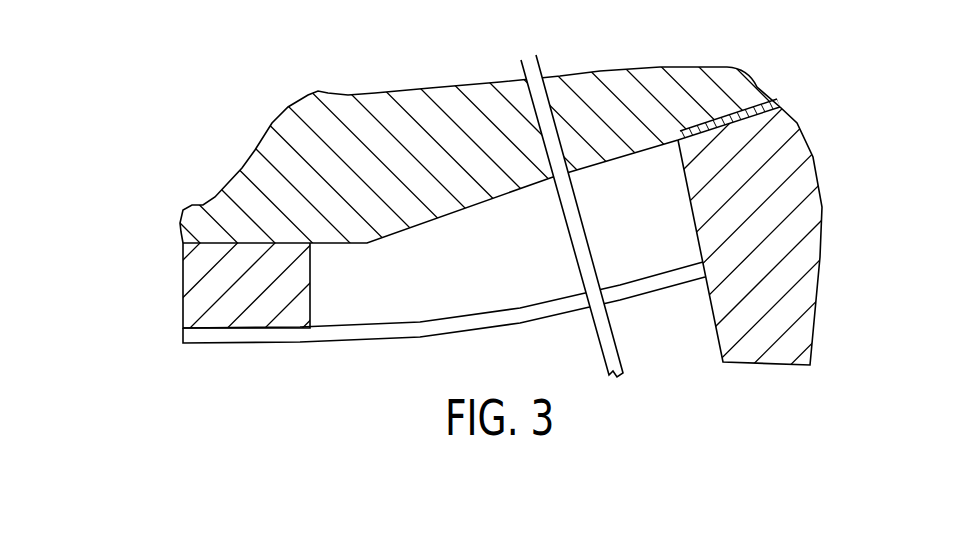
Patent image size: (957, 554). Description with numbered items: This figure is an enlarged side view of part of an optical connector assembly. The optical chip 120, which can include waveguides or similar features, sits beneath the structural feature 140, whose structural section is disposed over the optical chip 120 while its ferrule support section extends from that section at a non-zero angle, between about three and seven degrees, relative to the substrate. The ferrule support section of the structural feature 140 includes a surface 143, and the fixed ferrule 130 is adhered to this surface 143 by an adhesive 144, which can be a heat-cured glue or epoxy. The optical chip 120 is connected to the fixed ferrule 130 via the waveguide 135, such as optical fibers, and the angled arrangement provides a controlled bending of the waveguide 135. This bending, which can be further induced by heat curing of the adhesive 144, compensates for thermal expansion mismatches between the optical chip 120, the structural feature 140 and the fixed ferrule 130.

The optical chip 120 is at (188, 278).
The fixed ferrule 130 is at (807, 175).
The waveguide 135 is at (327, 337).
The structural feature 140 is at (382, 108).
The surface 143 is at (748, 108).
The adhesive 144 is at (760, 115).